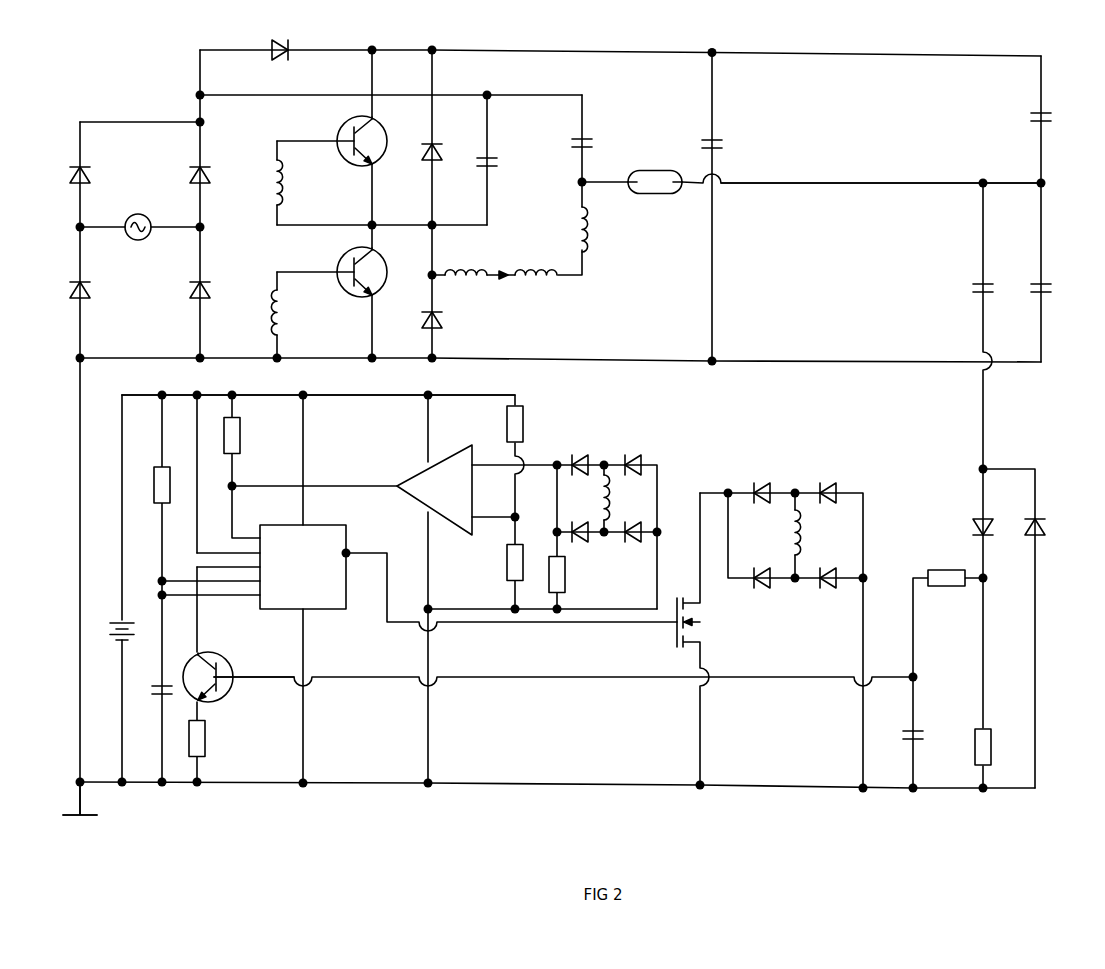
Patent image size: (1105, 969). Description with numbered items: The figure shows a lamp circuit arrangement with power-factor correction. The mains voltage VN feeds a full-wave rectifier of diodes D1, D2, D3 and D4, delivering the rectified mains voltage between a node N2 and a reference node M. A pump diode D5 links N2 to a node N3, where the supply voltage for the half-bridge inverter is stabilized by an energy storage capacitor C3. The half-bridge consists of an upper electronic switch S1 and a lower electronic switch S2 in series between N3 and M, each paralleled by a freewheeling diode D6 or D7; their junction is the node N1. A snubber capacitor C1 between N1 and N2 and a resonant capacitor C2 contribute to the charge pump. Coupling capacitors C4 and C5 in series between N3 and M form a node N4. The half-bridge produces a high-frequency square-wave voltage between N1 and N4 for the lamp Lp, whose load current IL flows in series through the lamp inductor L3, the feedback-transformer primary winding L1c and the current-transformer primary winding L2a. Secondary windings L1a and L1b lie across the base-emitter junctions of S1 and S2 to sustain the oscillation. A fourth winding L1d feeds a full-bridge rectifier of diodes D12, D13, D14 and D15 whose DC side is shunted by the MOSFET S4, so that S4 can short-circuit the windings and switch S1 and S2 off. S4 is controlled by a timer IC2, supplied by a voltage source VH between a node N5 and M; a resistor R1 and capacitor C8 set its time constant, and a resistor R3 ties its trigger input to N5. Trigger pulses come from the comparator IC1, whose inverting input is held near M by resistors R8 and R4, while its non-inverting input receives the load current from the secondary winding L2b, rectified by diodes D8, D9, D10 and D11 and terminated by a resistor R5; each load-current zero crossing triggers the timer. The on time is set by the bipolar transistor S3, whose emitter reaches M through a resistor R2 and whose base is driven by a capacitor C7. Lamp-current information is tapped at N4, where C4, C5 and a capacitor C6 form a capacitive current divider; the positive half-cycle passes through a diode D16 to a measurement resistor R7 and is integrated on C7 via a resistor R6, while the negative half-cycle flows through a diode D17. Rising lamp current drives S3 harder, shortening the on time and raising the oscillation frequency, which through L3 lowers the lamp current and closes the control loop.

The node N1 is at (436, 250).
The node N2 is at (138, 120).
The node N3 is at (481, 49).
The node N4 is at (1045, 186).
The node N5 is at (122, 427).
The diode D1 is at (67, 176).
The diode D2 is at (185, 176).
The diode D3 is at (67, 291).
The diode D4 is at (185, 291).
The pump diode D5 is at (279, 41).
The freewheeling diode D6 is at (419, 152).
The freewheeling diode D7 is at (419, 320).
The diode D8 is at (580, 455).
The diode D9 is at (632, 455).
The diode D10 is at (587, 543).
The diode D11 is at (637, 543).
The diode D12 is at (762, 483).
The diode D13 is at (828, 483).
The diode D14 is at (762, 588).
The diode D15 is at (828, 588).
The diode D16 is at (966, 527).
The diode D17 is at (1053, 527).
The mains voltage VN is at (140, 237).
The voltage source VH is at (111, 620).
The upper electronic switch S1 is at (332, 137).
The lower electronic switch S2 is at (332, 291).
The bipolar transistor S3 is at (238, 672).
The MOSFET S4 is at (704, 639).
The secondary winding L1a is at (300, 183).
The secondary winding L1b is at (293, 315).
The primary winding L1c is at (459, 287).
The fourth winding L1d is at (814, 532).
The primary winding L2a is at (536, 287).
The secondary winding L2b is at (626, 497).
The lamp inductor L3 is at (566, 229).
The lamp Lp is at (655, 195).
The lamp current IL is at (501, 286).
The snubber capacitor C1 is at (501, 162).
The resonant capacitor C2 is at (595, 143).
The energy storage capacitor C3 is at (725, 144).
The coupling capacitor C4 is at (1055, 117).
The coupling capacitor C5 is at (1055, 288).
The capacitor C6 is at (970, 288).
The capacitor C7 is at (925, 735).
The capacitor C8 is at (152, 700).
The resistor R1 is at (149, 485).
The resistor R2 is at (209, 739).
The resistor R3 is at (245, 436).
The resistor R4 is at (502, 563).
The resistor R5 is at (545, 575).
The resistor R6 is at (946, 589).
The measurement resistor R7 is at (995, 747).
The resistor R8 is at (502, 424).
The operational amplifier IC1 is at (436, 489).
The timer IC2 is at (303, 567).
The reference node M is at (80, 812).